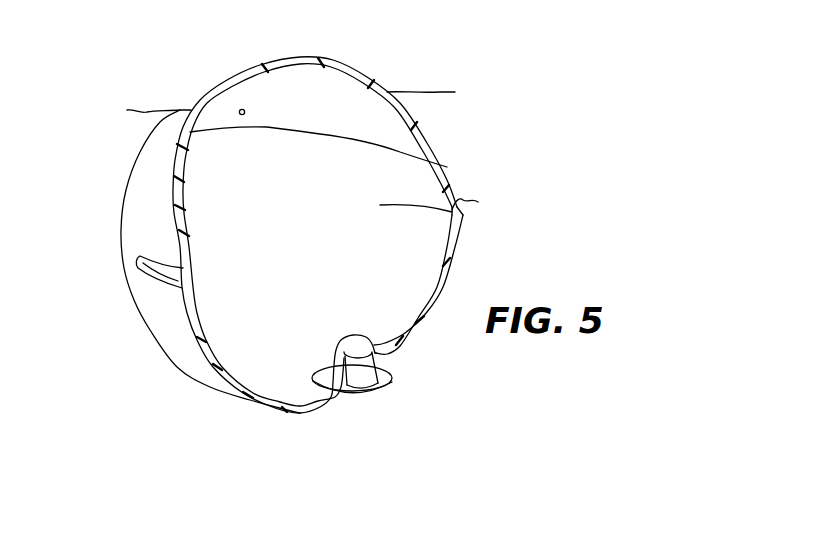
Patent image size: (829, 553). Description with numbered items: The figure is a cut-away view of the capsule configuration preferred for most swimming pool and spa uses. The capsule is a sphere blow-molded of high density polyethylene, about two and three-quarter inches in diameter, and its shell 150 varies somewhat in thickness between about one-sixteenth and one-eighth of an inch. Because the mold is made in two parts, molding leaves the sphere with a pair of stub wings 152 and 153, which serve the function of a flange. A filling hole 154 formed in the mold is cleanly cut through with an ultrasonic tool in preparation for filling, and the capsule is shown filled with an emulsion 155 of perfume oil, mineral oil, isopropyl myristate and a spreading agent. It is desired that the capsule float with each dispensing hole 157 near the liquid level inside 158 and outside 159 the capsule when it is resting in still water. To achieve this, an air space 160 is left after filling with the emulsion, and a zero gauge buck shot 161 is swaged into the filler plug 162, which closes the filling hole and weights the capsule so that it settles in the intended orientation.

The shell 150 is at (328, 62).
The stub wing 152 is at (163, 270).
The stub wing 153 is at (478, 202).
The filling hole 154 is at (373, 343).
The emulsion 155 is at (344, 230).
The dispensing hole 157 is at (245, 110).
The liquid level inside 158 is at (368, 138).
The liquid level outside 159 is at (413, 92).
The air space 160 is at (313, 125).
The zero gauge buck shot 161 is at (388, 364).
The filler plug 162 is at (367, 398).